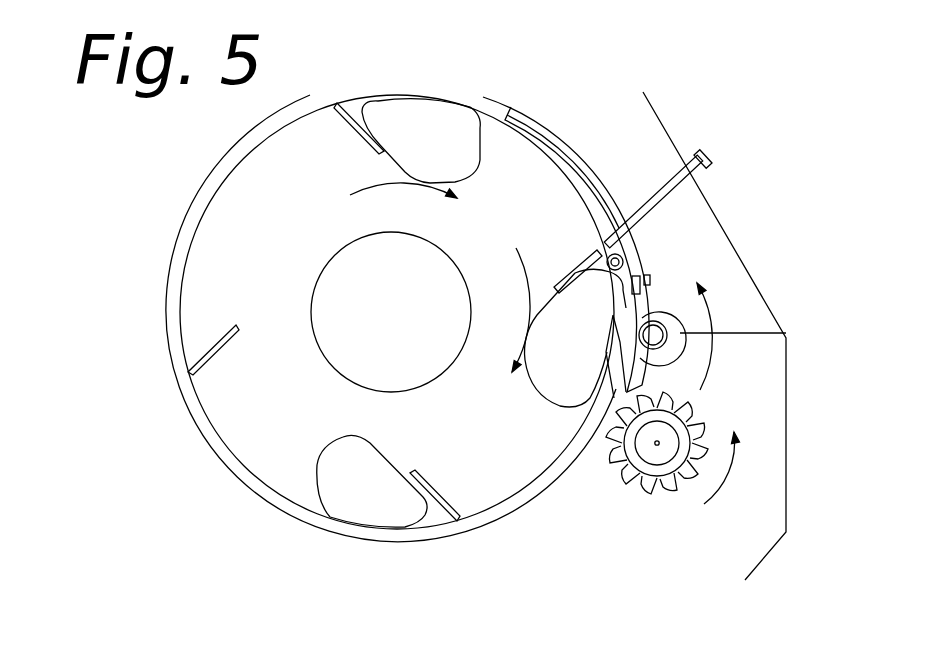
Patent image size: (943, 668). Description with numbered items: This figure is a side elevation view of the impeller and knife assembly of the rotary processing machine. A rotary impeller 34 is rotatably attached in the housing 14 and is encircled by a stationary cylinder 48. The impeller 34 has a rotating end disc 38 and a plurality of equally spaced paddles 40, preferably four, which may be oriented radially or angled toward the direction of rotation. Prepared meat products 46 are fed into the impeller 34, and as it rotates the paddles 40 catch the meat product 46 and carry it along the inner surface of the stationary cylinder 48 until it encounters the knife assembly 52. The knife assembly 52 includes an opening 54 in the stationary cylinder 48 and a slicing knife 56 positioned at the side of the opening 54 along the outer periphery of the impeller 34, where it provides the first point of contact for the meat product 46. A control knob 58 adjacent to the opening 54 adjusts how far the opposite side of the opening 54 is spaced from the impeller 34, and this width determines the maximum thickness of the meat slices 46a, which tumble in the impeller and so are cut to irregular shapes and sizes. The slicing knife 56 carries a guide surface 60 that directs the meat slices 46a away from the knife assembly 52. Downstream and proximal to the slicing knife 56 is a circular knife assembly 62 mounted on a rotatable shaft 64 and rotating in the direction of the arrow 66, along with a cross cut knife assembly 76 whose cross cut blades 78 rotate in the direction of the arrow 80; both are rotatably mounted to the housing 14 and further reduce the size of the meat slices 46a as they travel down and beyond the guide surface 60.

The housing 14 is at (643, 92).
The rotary impeller 34 is at (355, 360).
The rotating end disc 38 is at (240, 438).
The paddle 40 is at (187, 370).
The prepared meat product 46 is at (425, 107).
The meat slices 46a is at (620, 400).
The stationary cylinder 48 is at (503, 508).
The knife assembly 52 is at (712, 228).
The opening 54 is at (632, 317).
The slicing knife 56 is at (640, 269).
The control knob 58 is at (705, 153).
The guide surface 60 is at (602, 350).
The circular knife assembly 62 is at (690, 340).
The rotatable shaft 64 is at (680, 363).
The arrow 66 is at (786, 333).
The cross cut knife assembly 76 is at (655, 455).
The cross cut blades 78 is at (673, 462).
The arrow 80 is at (730, 470).